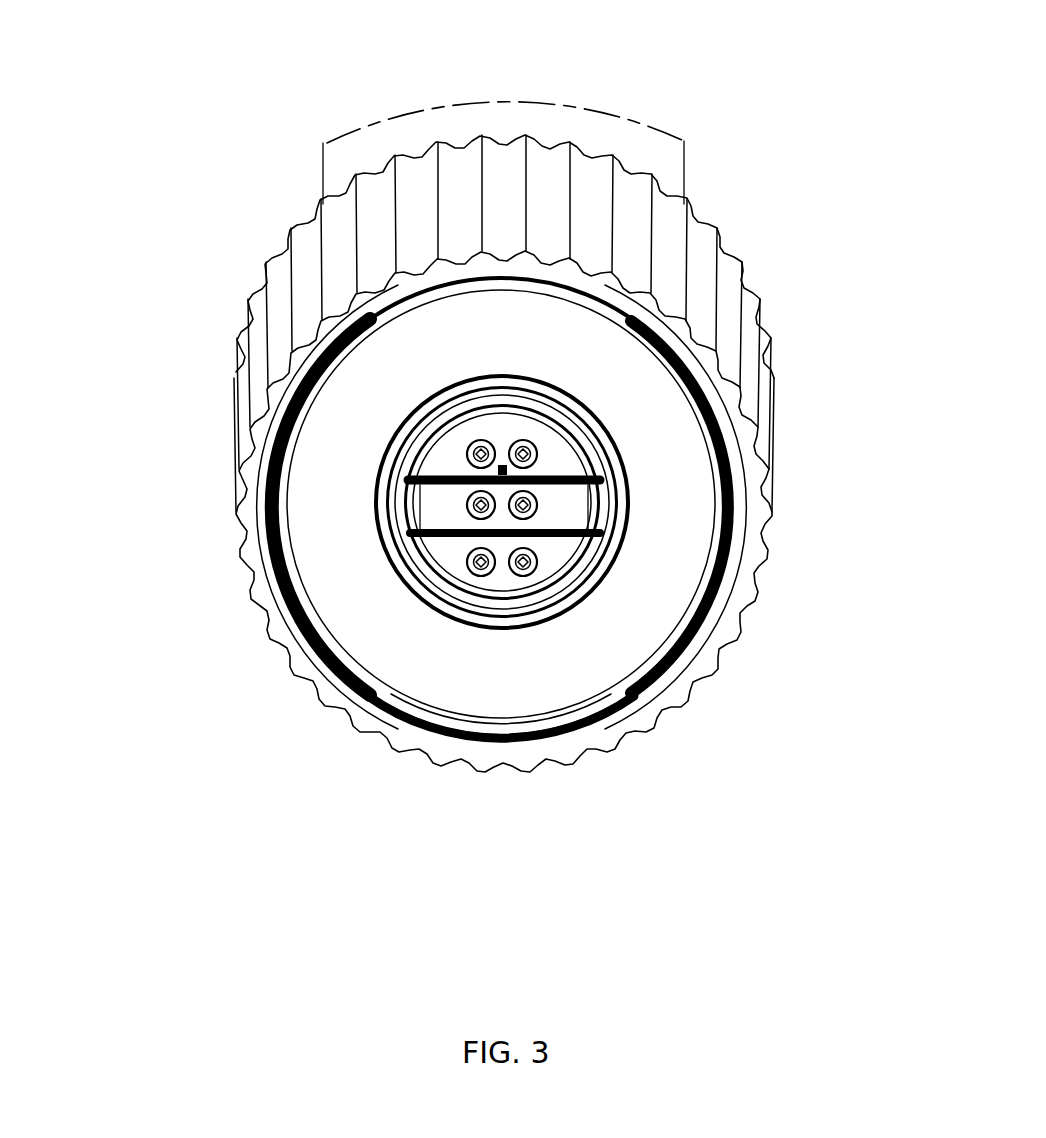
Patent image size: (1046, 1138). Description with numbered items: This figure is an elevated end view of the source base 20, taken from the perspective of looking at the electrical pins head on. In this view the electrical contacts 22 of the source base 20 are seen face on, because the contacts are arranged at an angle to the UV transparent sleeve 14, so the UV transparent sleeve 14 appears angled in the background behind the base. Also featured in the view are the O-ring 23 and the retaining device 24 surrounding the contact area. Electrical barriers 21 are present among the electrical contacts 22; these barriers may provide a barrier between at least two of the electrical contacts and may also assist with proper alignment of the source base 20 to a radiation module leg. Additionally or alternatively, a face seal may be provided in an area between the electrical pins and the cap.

The UV transparent sleeve 14 is at (687, 166).
The source base 20 is at (495, 722).
The electrical barriers 21 is at (437, 493).
The electrical contacts 22 is at (546, 505).
The O-ring 23 is at (617, 437).
The retaining device 24 is at (732, 306).